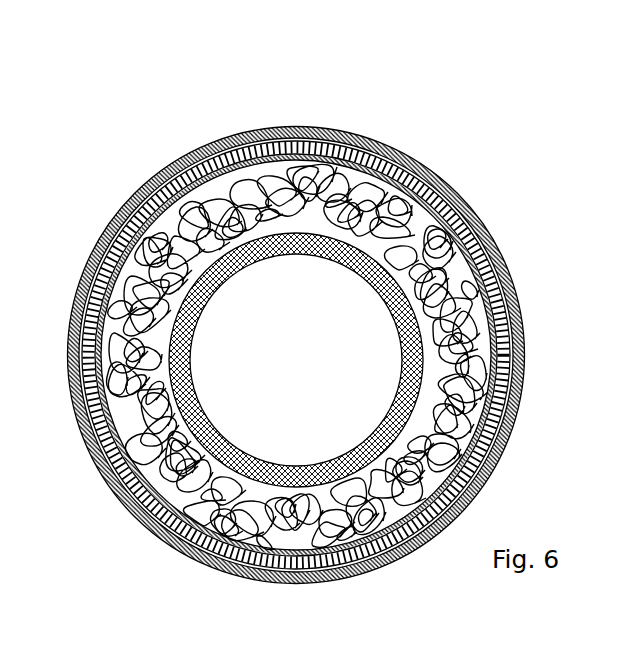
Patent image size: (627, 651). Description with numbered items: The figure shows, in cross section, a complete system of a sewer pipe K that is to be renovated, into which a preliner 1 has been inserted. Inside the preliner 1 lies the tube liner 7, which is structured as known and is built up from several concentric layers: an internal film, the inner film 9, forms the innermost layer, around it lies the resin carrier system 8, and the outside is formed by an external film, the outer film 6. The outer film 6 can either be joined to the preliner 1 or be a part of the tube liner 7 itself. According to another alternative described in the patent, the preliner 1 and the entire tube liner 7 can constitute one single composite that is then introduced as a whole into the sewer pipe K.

The preliner 1 is at (268, 131).
The outer film 6 is at (345, 133).
The sewer pipe K is at (437, 185).
The tube liner 7 is at (458, 300).
The resin carrier system 8 is at (223, 251).
The inner film 9 is at (250, 460).